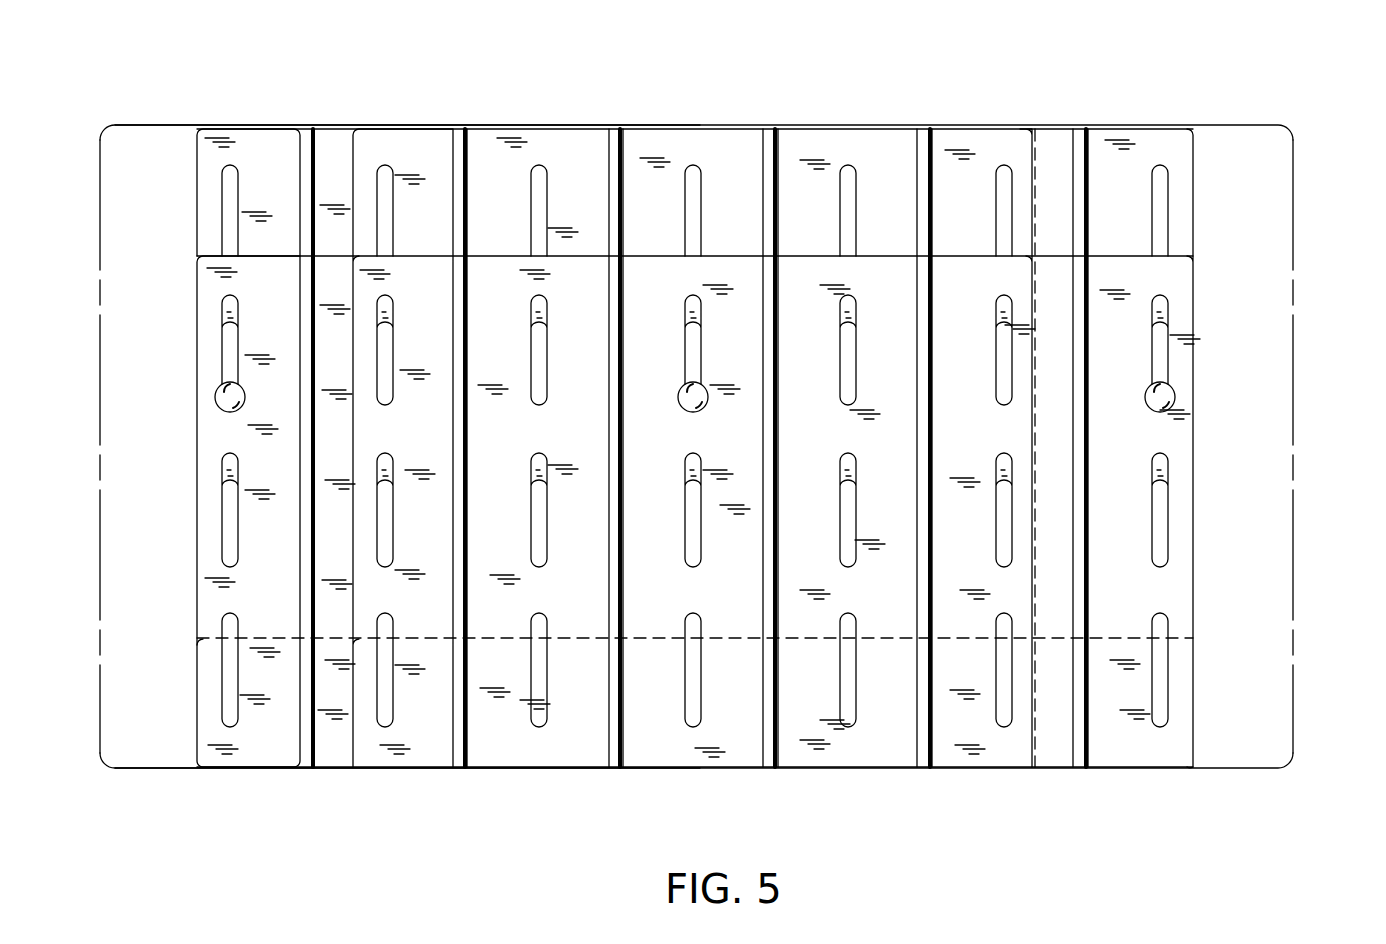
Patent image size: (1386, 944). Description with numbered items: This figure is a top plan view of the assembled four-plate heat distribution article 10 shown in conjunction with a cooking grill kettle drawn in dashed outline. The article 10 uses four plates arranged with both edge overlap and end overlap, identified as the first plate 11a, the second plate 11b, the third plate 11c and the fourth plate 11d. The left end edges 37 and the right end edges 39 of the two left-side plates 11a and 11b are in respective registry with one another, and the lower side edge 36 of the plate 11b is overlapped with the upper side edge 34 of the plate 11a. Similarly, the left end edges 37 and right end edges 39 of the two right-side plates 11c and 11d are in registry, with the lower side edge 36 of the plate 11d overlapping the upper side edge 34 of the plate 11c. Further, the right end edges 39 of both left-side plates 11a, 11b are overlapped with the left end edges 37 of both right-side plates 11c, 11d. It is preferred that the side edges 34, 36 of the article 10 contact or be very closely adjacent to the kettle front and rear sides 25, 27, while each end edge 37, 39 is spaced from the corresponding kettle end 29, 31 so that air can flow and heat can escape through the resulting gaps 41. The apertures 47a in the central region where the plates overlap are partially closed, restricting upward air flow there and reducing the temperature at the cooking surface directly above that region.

The heat distribution article 10 is at (995, 108).
The first plate 11a is at (260, 755).
The second plate 11b is at (257, 137).
The third plate 11c is at (720, 752).
The fourth plate 11d is at (818, 147).
The kettle front side 25 is at (162, 124).
The kettle rear side 27 is at (168, 772).
The kettle end 29 is at (102, 372).
The kettle end 31 is at (1292, 348).
The upper side edge 34 is at (410, 125).
The lower side edge 36 is at (520, 645).
The left end edge 37 is at (200, 485).
The right end edge 39 is at (1038, 335).
The gap 41 is at (123, 667).
The aperture 47a is at (537, 375).